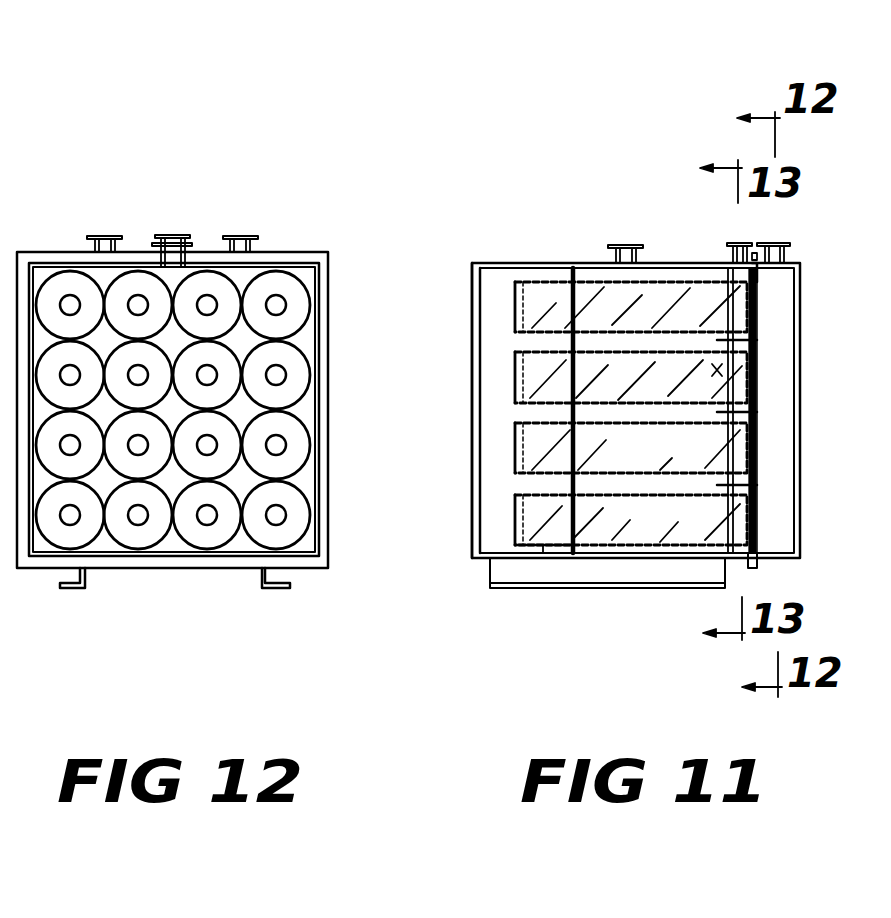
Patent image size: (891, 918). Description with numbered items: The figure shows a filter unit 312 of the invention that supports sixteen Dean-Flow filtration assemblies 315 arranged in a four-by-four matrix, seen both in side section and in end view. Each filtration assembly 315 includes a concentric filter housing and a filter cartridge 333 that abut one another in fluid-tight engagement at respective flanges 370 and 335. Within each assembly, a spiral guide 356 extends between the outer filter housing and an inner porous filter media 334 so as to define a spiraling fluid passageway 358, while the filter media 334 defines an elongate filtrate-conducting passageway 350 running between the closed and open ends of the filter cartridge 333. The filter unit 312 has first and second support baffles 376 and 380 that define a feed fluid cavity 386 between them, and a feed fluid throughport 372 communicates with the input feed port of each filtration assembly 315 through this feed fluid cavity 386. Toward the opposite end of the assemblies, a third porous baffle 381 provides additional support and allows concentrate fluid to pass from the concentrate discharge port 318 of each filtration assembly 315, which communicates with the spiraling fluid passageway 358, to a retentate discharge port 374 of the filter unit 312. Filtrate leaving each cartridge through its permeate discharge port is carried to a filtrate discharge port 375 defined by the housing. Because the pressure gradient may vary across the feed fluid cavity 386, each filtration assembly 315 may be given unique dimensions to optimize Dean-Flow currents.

In FIG. 12, the filter unit 312 is at (148, 168).
In FIG. 11, the filter unit 312 is at (595, 148).
In FIG. 12, the filtration assembly 315 is at (302, 282).
In FIG. 11, the filtration assembly 315 is at (528, 277).
In FIG. 12, the concentrate discharge port 318 is at (285, 367).
In FIG. 11, the concentrate discharge port 318 is at (513, 515).
In FIG. 11, the filter cartridge 333 is at (758, 527).
In FIG. 11, the filter media 334 is at (557, 538).
In FIG. 11, the flange 335 is at (757, 280).
In FIG. 11, the filtrate-conducting passageway 350 is at (660, 462).
In FIG. 11, the spiral guide 356 is at (720, 372).
In FIG. 11, the spiraling fluid passageway 358 is at (597, 280).
In FIG. 11, the flange 370 is at (760, 280).
In FIG. 12, the feed fluid throughport 372 is at (100, 237).
In FIG. 11, the feed fluid throughport 372 is at (737, 243).
In FIG. 12, the retentate discharge port 374 is at (245, 237).
In FIG. 11, the retentate discharge port 374 is at (622, 246).
In FIG. 12, the filtrate discharge port 375 is at (175, 237).
In FIG. 11, the filtrate discharge port 375 is at (777, 243).
In FIG. 11, the first support baffle 376 is at (727, 547).
In FIG. 11, the second support baffle 380 is at (543, 547).
In FIG. 11, the third porous baffle 381 is at (547, 280).
In FIG. 11, the feed fluid cavity 386 is at (740, 487).